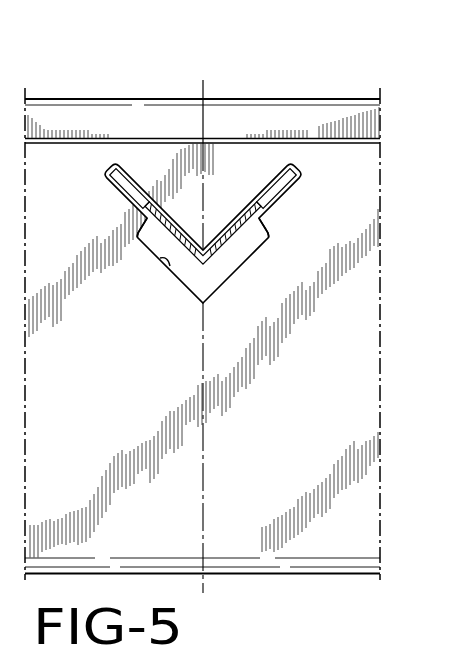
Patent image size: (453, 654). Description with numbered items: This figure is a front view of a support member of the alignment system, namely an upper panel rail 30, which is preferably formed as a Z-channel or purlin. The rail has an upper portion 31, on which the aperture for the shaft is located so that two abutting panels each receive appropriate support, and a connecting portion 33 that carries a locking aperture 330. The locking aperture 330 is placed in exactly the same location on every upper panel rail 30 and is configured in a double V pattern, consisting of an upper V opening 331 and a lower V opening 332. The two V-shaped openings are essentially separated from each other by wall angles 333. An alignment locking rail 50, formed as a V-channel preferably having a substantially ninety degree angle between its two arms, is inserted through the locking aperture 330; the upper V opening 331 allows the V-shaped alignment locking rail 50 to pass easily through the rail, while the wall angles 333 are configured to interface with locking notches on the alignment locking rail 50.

The upper panel rail 30 is at (243, 90).
The upper portion 31 is at (105, 117).
The connecting portion 33 is at (325, 367).
The locking aperture 330 is at (217, 267).
The upper V opening 331 is at (298, 172).
The lower V opening 332 is at (160, 259).
The wall angle 333 is at (136, 221).
The alignment locking rail 50 is at (238, 222).